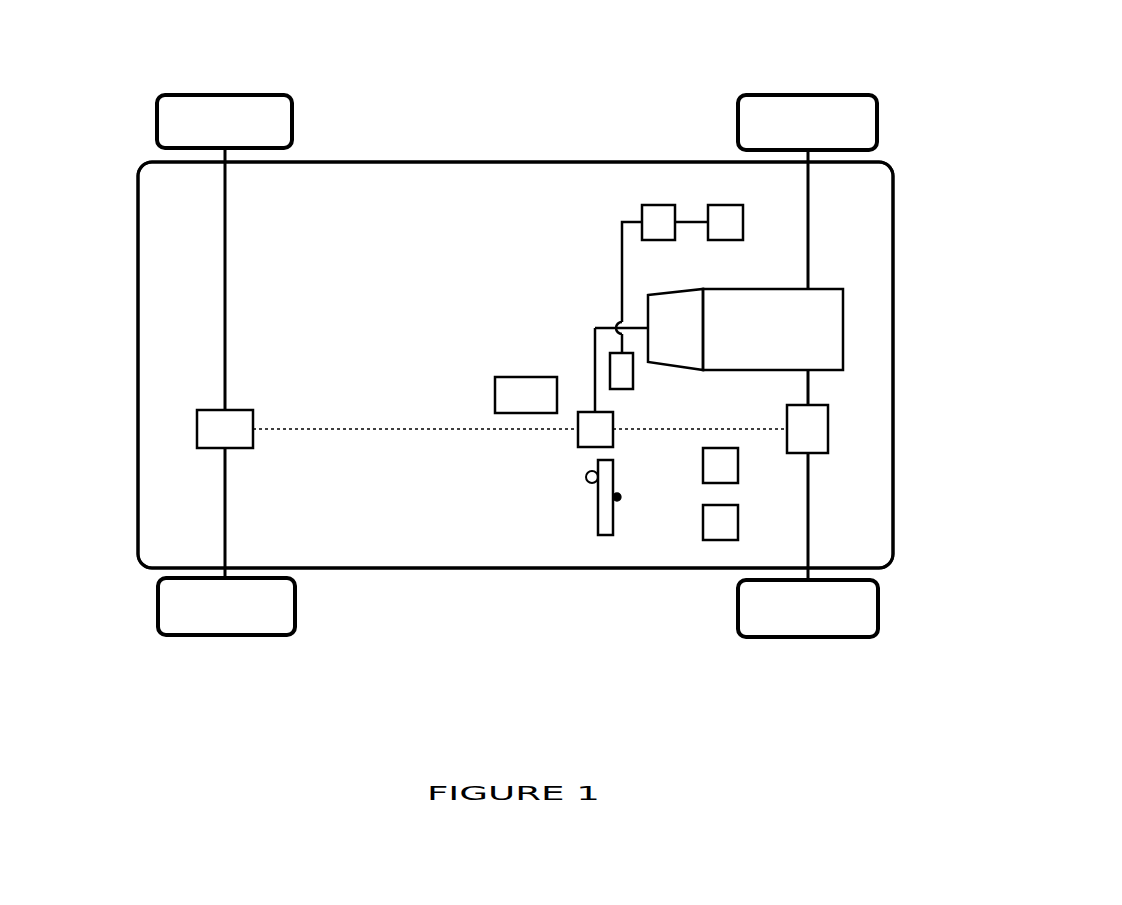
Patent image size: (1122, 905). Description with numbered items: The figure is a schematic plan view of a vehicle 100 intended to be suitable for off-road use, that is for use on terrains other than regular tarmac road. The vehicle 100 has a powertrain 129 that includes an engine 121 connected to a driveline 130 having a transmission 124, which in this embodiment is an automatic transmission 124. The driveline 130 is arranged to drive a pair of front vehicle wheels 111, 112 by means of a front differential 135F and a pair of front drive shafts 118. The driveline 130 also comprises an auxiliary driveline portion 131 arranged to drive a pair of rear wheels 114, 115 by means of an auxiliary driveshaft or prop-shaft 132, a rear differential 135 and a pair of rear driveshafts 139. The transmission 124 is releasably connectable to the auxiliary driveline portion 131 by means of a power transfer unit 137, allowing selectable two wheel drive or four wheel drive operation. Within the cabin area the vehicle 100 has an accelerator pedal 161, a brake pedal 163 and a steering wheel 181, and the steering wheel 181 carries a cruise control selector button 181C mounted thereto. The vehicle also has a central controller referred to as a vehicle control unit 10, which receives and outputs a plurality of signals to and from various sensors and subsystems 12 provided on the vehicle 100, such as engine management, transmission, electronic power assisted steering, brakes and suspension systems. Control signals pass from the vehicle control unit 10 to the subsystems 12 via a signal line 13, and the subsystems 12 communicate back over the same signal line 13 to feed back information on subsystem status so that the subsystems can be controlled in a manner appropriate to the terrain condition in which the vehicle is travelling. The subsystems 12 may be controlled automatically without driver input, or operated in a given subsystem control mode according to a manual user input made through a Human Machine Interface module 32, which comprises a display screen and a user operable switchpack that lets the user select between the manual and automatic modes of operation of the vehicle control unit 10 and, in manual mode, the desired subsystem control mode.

The vehicle 100 is at (988, 118).
The vehicle control unit 10 is at (648, 205).
The vehicle subsystems 12 is at (725, 205).
The signal line 13 is at (690, 220).
The Human Machine Interface module 32 is at (606, 355).
The front vehicle wheel 111 is at (858, 105).
The front vehicle wheel 112 is at (857, 625).
The rear wheel 114 is at (188, 105).
The rear wheel 115 is at (186, 623).
The front drive shafts 118 is at (810, 208).
The engine 121 is at (843, 318).
The transmission 124 is at (680, 305).
The powertrain 129 is at (988, 363).
The driveline 130 is at (990, 578).
The auxiliary driveline portion 131 is at (402, 598).
The auxiliary driveshaft 132 is at (363, 432).
The rear differential 135 is at (200, 430).
The front differential 135F is at (828, 430).
The power transfer unit 137 is at (587, 443).
The rear driveshafts 139 is at (225, 266).
The accelerator pedal 161 is at (718, 530).
The brake pedal 163 is at (710, 465).
The steering wheel 181 is at (605, 537).
The cruise control selector button 181C is at (590, 484).